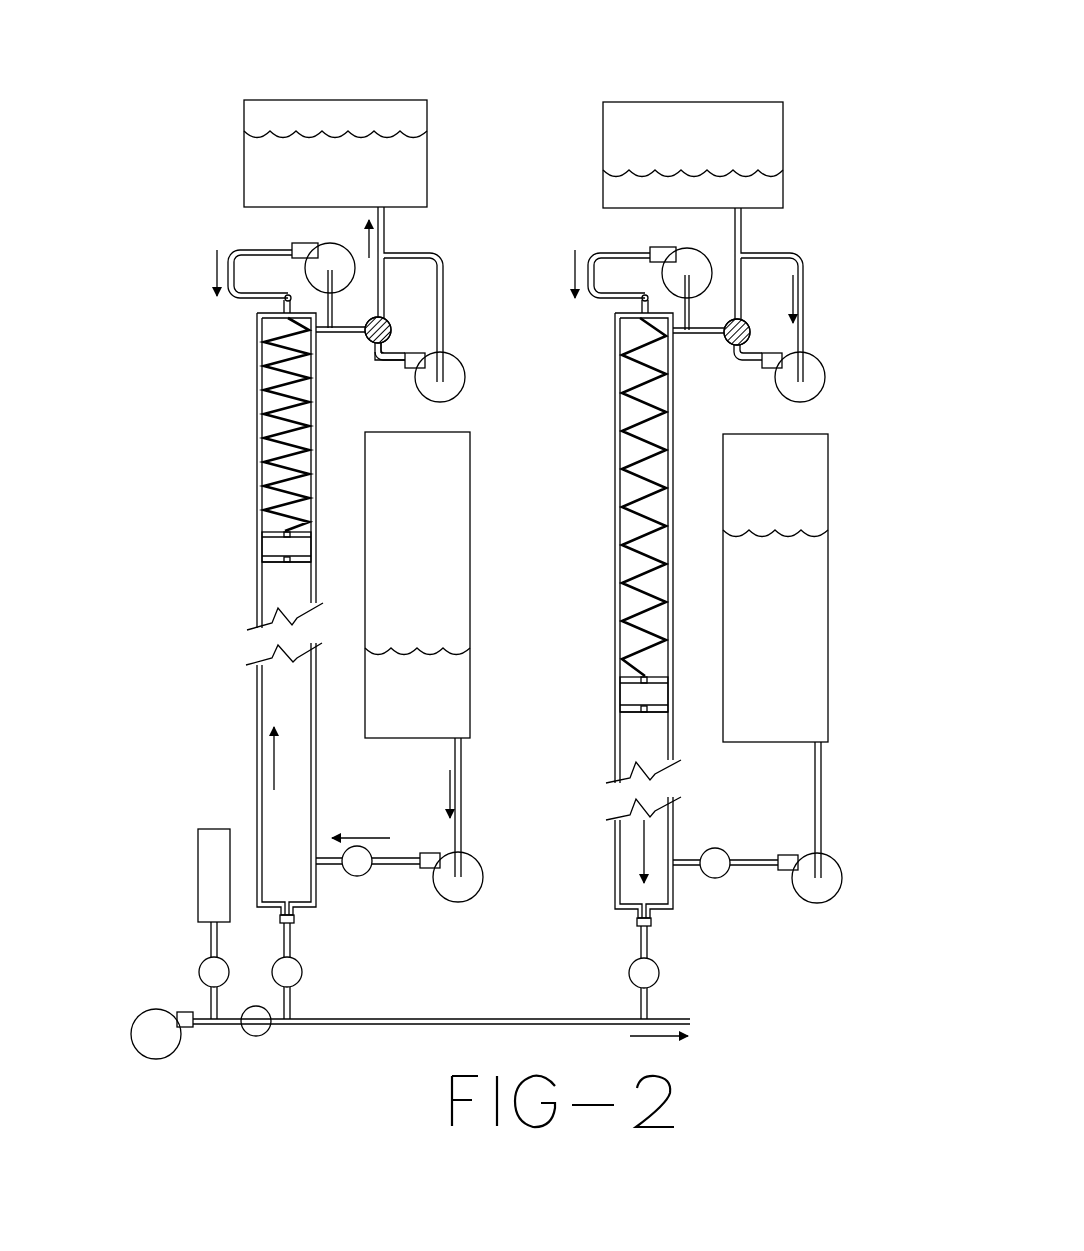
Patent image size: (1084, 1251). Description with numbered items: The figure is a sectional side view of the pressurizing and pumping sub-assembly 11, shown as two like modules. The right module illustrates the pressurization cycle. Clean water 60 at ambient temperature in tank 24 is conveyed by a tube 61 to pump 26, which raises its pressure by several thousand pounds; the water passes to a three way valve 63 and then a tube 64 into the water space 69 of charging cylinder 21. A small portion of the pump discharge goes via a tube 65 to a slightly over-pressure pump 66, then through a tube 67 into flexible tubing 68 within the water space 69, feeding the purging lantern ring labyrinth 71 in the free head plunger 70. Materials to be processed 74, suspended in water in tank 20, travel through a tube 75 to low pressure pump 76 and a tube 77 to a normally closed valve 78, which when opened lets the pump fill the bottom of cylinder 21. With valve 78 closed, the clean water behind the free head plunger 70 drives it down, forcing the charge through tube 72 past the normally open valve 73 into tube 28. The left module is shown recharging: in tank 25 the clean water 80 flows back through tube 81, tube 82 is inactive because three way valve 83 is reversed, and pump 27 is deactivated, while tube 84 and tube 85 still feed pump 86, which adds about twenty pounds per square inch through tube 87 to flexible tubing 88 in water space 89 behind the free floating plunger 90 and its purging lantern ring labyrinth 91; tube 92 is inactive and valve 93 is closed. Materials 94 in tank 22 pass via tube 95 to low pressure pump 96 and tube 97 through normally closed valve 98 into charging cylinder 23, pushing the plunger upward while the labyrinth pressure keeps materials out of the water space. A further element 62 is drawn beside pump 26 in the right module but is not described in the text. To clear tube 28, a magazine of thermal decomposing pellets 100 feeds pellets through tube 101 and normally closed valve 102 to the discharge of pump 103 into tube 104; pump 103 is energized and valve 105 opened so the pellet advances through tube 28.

The sub-assembly 11 is at (513, 133).
The tank 20 is at (788, 742).
The charging cylinder 21 is at (615, 548).
The tank 22 is at (470, 570).
The charging cylinder 23 is at (257, 705).
The tank 24 is at (683, 102).
The tank 25 is at (345, 100).
The pump 26 is at (827, 362).
The pump 27 is at (493, 363).
The tube 28 is at (548, 1017).
The clean water 60 is at (693, 191).
The tube 61 is at (745, 240).
The second feed pump 62 is at (753, 373).
The three way valve 63 is at (730, 345).
The tube 64 is at (690, 338).
The tube 65 is at (680, 292).
The over-pressure pump 66 is at (655, 248).
The tube 67 is at (603, 300).
The flexible tubing 68 is at (623, 383).
The water space 69 is at (615, 622).
The free head plunger 70 is at (630, 692).
The purging lantern ring labyrinth 71 is at (633, 717).
The tube 72 is at (640, 943).
The valve 73 is at (655, 980).
The materials to be processed 74 is at (775, 588).
The tube 75 is at (815, 785).
The low pressure pump 76 is at (833, 905).
The tube 77 is at (760, 870).
The valve 78 is at (727, 878).
The clean water 80 is at (335, 160).
The tube 81 is at (386, 237).
The tube 82 is at (395, 370).
The three way valve 83 is at (370, 342).
The tube 84 is at (323, 337).
The tube 85 is at (320, 292).
The pump 86 is at (300, 245).
The tube 87 is at (240, 298).
The flexible tubing 88 is at (265, 372).
The water space 89 is at (267, 476).
The free floating plunger 90 is at (273, 545).
The purging lantern ring labyrinth 91 is at (310, 566).
The tube 92 is at (290, 930).
The valve 93 is at (295, 980).
The materials to be processed 94 is at (417, 684).
The tube 95 is at (463, 762).
The low pressure pump 96 is at (478, 892).
The tube 97 is at (413, 855).
The valve 98 is at (360, 877).
The magazine of thermal decomposing pellets 100 is at (198, 860).
The tube 101 is at (210, 943).
The valve 102 is at (202, 980).
The pump 103 is at (138, 1053).
The tube 104 is at (217, 1025).
The valve 105 is at (255, 1035).